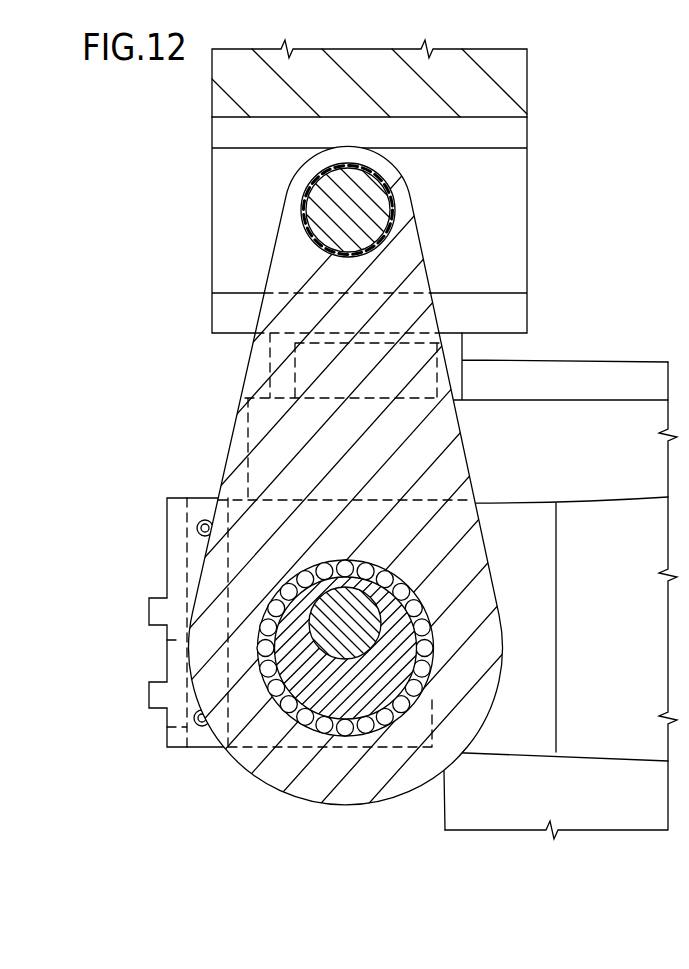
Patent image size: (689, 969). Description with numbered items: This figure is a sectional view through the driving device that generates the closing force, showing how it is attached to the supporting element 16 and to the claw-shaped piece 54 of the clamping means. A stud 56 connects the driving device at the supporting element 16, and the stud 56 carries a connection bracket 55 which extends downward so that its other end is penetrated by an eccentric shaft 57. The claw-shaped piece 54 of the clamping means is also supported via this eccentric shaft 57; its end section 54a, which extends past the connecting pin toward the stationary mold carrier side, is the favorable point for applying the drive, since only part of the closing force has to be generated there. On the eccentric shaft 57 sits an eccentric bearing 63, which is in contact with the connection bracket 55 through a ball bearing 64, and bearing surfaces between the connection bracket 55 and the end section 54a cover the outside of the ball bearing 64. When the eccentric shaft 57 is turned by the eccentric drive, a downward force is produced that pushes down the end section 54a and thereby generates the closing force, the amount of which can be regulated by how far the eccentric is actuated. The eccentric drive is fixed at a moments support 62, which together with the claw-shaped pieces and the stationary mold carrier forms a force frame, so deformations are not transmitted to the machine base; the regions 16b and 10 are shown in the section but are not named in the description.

The supporting element 16 is at (480, 93).
The frame bracket 16b is at (495, 258).
The stud 56 is at (357, 207).
The connection bracket 55 is at (277, 453).
The eccentric shaft 57 is at (348, 618).
The moments support 62 is at (156, 645).
The eccentric bearing 63 is at (350, 697).
The ball bearing 64 is at (300, 722).
The claw-shaped piece 54 is at (512, 755).
The end section 54a is at (602, 645).
The machine frame 10 is at (558, 480).